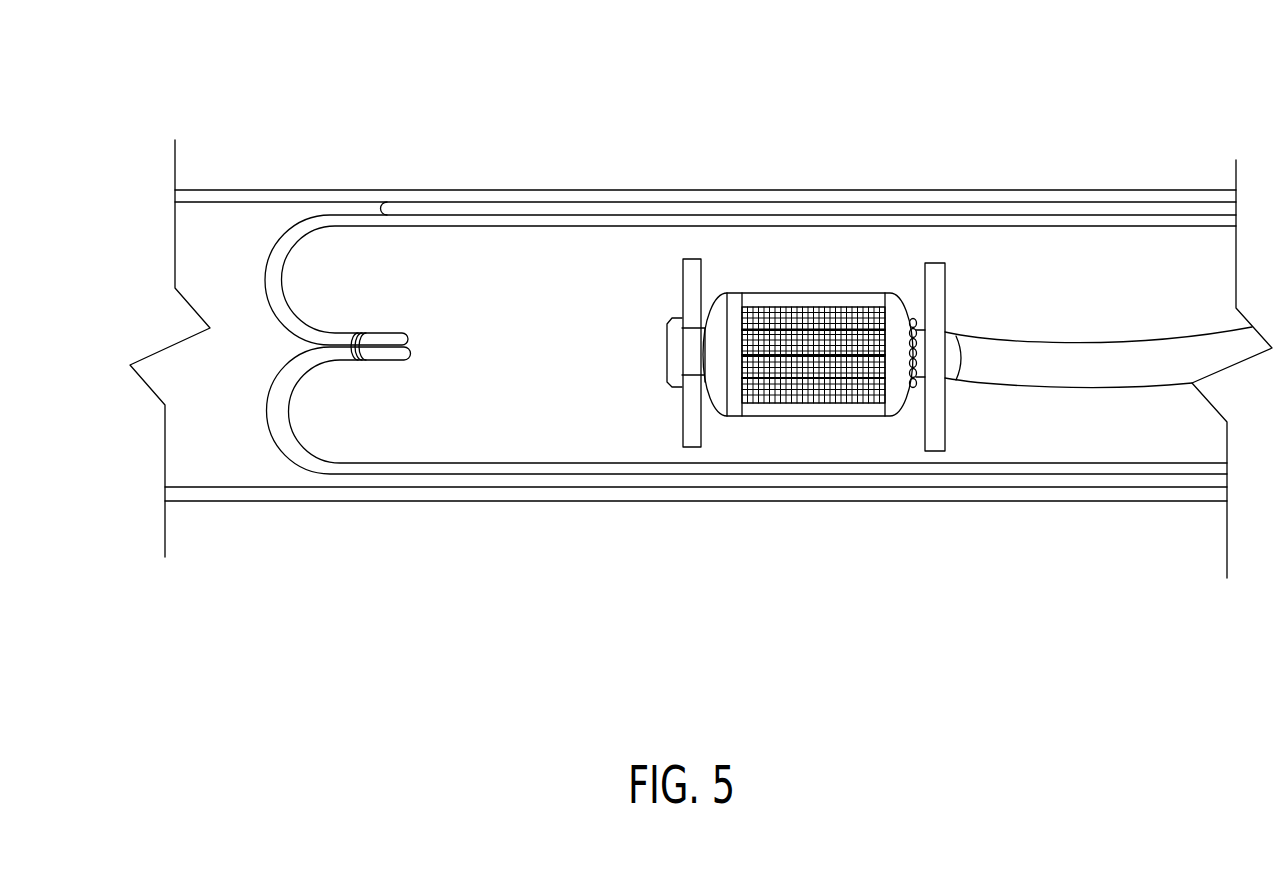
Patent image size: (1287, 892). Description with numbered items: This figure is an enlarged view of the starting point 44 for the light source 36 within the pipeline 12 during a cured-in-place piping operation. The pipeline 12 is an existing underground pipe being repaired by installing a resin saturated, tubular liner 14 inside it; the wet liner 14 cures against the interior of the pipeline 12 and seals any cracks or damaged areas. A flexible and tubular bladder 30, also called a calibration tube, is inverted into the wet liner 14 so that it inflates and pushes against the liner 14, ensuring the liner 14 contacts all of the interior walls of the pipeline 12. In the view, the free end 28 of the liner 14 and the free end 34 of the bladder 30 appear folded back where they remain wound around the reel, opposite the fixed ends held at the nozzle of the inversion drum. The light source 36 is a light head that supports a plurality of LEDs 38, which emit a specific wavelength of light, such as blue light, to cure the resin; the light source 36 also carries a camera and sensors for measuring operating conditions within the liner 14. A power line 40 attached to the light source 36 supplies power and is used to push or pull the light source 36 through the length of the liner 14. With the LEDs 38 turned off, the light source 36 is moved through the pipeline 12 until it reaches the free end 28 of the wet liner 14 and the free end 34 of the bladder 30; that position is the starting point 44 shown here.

The pipeline 12 is at (314, 189).
The liner 14 is at (428, 210).
The free end 28 is at (383, 473).
The bladder 30 is at (598, 222).
The free end 34 is at (364, 340).
The light source 36 is at (811, 408).
The LEDs 38 is at (806, 315).
The power line 40 is at (1114, 348).
The starting point 44 is at (826, 445).